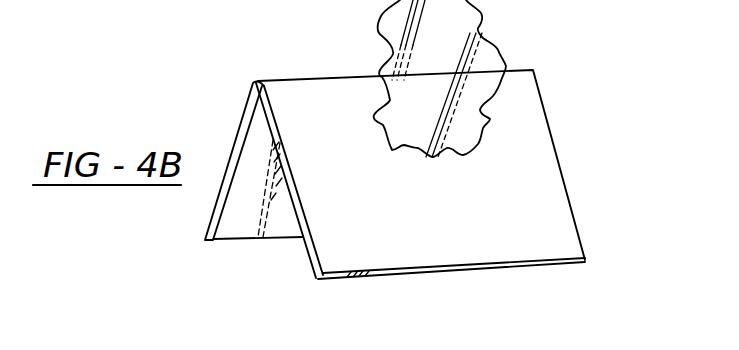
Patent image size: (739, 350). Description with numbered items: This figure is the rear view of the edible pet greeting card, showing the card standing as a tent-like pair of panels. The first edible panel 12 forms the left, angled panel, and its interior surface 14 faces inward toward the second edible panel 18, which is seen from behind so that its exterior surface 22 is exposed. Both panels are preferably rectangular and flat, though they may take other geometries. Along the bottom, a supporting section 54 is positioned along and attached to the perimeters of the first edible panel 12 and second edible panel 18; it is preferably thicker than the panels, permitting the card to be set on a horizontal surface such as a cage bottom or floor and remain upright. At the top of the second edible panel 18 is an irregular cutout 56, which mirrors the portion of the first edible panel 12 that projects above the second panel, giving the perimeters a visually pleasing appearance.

The first edible panel 12 is at (252, 141).
The interior surface 14 is at (245, 212).
The second edible panel 18 is at (527, 117).
The exterior surface 22 is at (516, 223).
The supporting section 54 is at (336, 283).
The cutout 56 is at (418, 152).